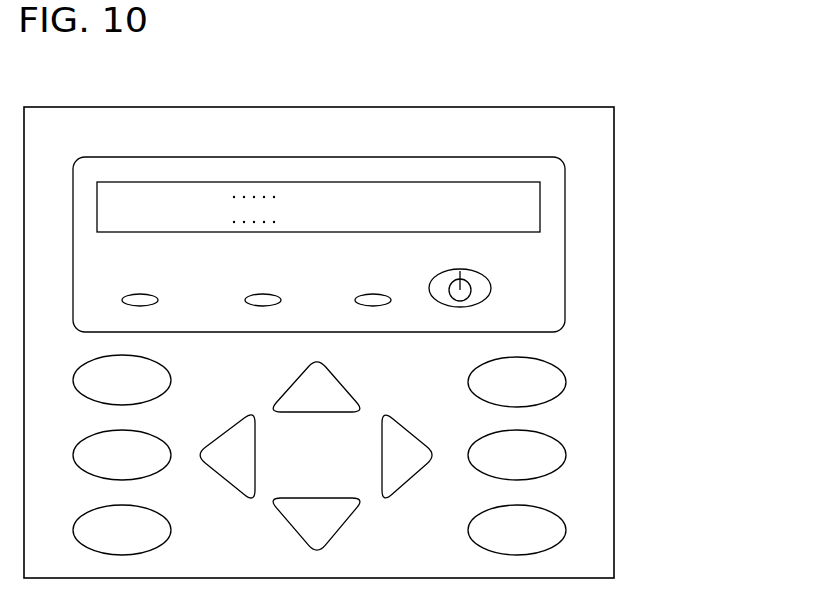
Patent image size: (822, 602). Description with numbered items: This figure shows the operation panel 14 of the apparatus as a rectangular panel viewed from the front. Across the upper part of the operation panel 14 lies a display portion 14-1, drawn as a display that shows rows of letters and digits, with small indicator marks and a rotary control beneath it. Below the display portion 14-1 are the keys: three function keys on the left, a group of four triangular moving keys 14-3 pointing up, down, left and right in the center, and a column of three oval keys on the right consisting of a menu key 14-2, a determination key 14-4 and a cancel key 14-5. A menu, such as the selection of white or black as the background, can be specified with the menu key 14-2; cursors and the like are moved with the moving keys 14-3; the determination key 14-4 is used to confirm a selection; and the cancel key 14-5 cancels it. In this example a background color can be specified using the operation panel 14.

The operation panel 14 is at (439, 108).
The display portion 14-1 is at (516, 206).
The menu key 14-2 is at (556, 363).
The moving keys 14-3 is at (443, 436).
The determination key 14-4 is at (571, 446).
The cancel key 14-5 is at (571, 538).